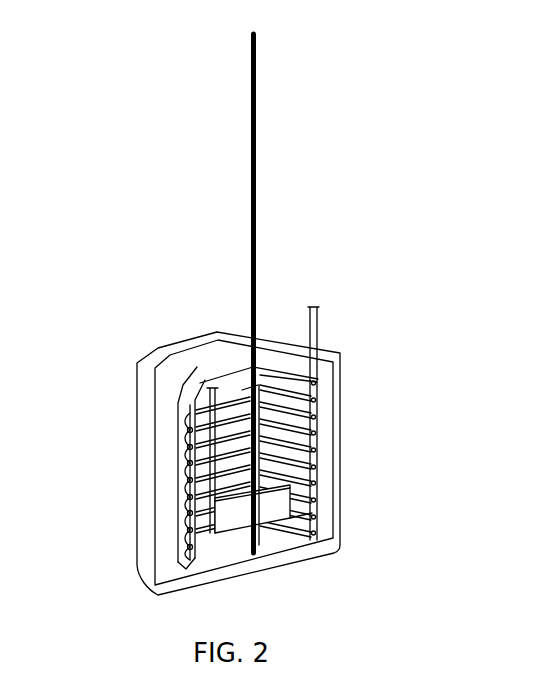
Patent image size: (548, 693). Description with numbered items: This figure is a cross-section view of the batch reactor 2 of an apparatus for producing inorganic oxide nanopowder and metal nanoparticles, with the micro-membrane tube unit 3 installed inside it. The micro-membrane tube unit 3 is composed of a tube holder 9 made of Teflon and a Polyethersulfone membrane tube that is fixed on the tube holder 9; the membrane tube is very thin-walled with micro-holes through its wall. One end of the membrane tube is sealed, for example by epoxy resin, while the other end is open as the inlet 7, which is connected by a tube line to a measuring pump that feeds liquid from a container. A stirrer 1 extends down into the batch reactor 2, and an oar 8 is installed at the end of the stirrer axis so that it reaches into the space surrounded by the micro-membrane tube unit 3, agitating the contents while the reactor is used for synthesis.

The stirrer 1 is at (251, 120).
The batch reactor 2 is at (157, 347).
The micro-membrane tube unit 3 is at (290, 458).
The inlet 7 is at (320, 307).
The oar 8 is at (266, 504).
The tube holder 9 is at (173, 389).